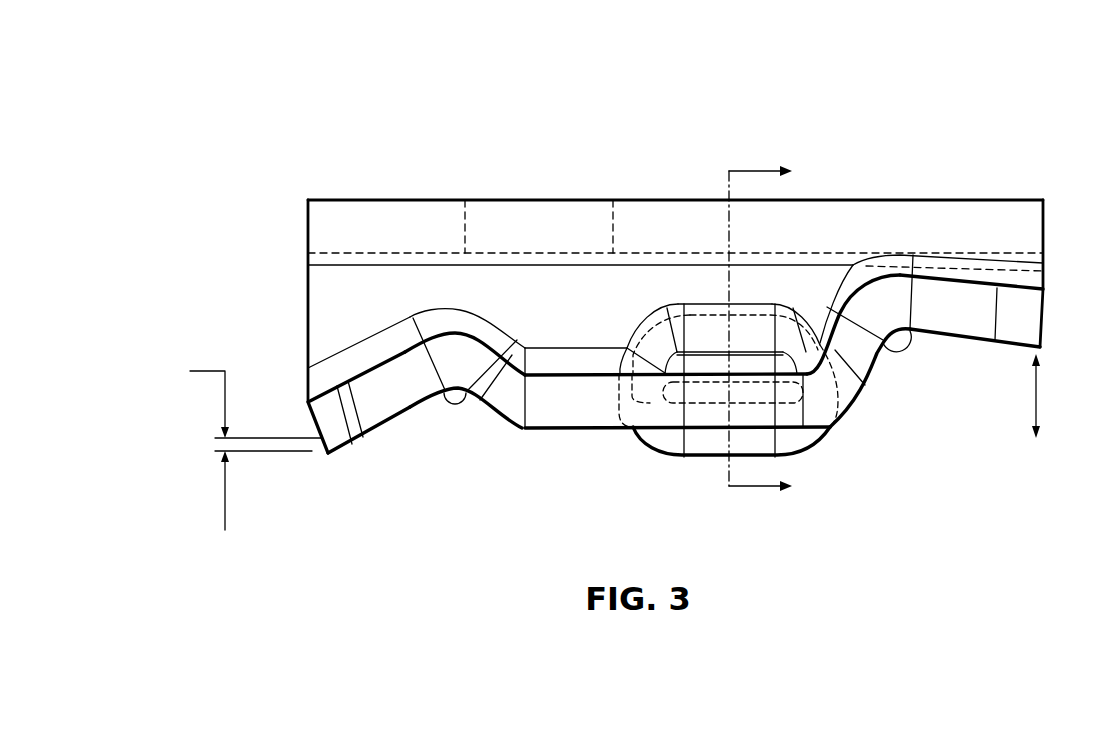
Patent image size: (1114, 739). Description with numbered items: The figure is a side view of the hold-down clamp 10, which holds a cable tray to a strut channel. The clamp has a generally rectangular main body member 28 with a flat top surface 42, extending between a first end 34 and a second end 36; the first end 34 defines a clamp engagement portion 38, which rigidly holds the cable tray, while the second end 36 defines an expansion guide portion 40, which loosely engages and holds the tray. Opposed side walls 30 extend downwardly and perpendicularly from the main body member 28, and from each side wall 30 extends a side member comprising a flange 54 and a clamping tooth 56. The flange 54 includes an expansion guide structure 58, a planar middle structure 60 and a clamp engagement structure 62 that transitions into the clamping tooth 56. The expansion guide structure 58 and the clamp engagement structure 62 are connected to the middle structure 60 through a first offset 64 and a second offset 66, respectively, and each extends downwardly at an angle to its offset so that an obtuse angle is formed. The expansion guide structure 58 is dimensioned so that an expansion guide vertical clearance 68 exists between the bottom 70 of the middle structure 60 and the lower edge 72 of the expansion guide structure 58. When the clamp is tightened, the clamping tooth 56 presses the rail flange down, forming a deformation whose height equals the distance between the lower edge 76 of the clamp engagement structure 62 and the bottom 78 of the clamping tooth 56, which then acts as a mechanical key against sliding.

The hold-down clamp 10 is at (726, 93).
The main body member 28 is at (660, 218).
The side walls 30 is at (335, 319).
The first end 34 is at (306, 238).
The second end 36 is at (1046, 230).
The clamp engagement portion 38 is at (362, 218).
The expansion guide portion 40 is at (987, 212).
The top surface 42 is at (852, 197).
The flange 54 is at (555, 403).
The clamping tooth 56 is at (323, 418).
The expansion guide structure 58 is at (975, 318).
The planar middle structure 60 is at (615, 405).
The clamp engagement structure 62 is at (383, 395).
The first offset 64 is at (868, 357).
The second offset 66 is at (485, 393).
The expansion guide vertical clearance 68 is at (1049, 396).
The bottom of the middle structure 70 is at (583, 430).
The lower edge of the expansion guide structure 72 is at (1042, 341).
The lower edge of the clamp engagement structure 76 is at (345, 447).
The bottom of the clamping tooth 78 is at (328, 455).